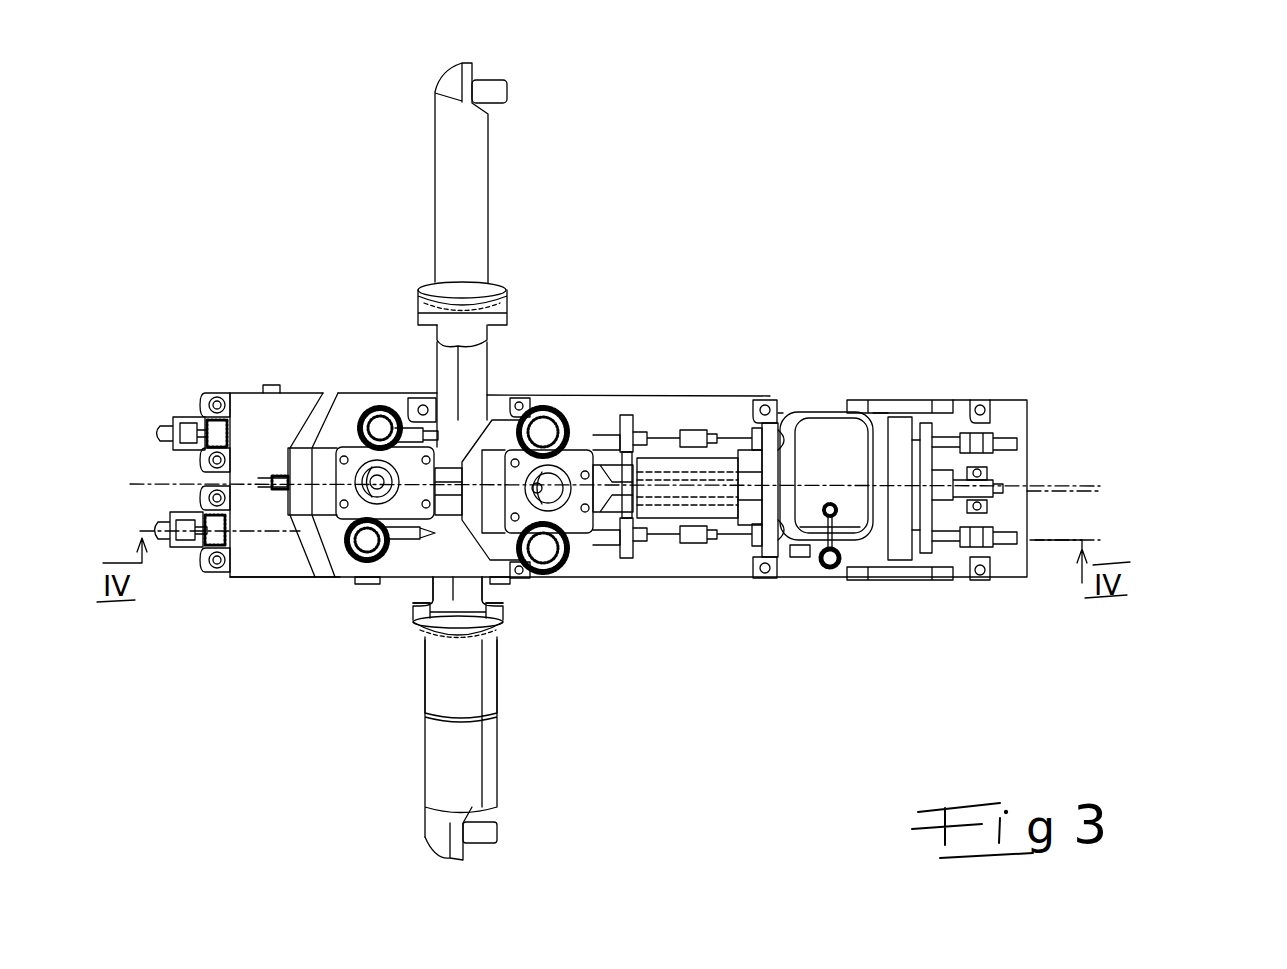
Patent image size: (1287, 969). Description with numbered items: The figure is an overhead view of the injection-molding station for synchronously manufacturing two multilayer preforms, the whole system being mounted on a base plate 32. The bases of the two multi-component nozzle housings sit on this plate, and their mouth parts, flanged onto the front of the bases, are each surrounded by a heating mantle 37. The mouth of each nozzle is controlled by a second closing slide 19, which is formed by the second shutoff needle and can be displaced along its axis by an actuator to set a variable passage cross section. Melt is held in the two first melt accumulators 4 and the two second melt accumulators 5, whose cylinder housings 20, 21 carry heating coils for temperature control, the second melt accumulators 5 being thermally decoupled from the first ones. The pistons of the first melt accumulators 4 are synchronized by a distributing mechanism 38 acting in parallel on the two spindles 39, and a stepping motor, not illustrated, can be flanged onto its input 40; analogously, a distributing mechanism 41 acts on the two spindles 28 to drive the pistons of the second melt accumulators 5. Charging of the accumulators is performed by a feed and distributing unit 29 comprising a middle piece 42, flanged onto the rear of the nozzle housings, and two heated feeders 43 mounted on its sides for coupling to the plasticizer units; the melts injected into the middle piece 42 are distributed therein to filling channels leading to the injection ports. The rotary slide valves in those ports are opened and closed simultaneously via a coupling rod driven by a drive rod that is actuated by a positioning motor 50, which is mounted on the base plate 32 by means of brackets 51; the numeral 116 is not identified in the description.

The first melt accumulator 4 is at (302, 592).
The second melt accumulator 5 is at (528, 418).
The second closing slide 19 is at (1043, 444).
The cylinder housing 20 is at (255, 560).
The cylinder housing 21 is at (438, 432).
The spindle 28 is at (593, 540).
The feed and distributing unit 29 is at (390, 655).
The base plate 32 is at (1028, 402).
The heating mantle 37 is at (178, 547).
The distributing mechanism 38 is at (354, 418).
The spindle 39 is at (403, 545).
The input 40 is at (363, 468).
The distributing mechanism 41 is at (473, 413).
The middle piece 42 is at (487, 588).
The heated feeder 43 is at (438, 750).
The positioning motor 50 is at (835, 382).
The bracket 51 is at (915, 402).
The connector 116 is at (218, 550).